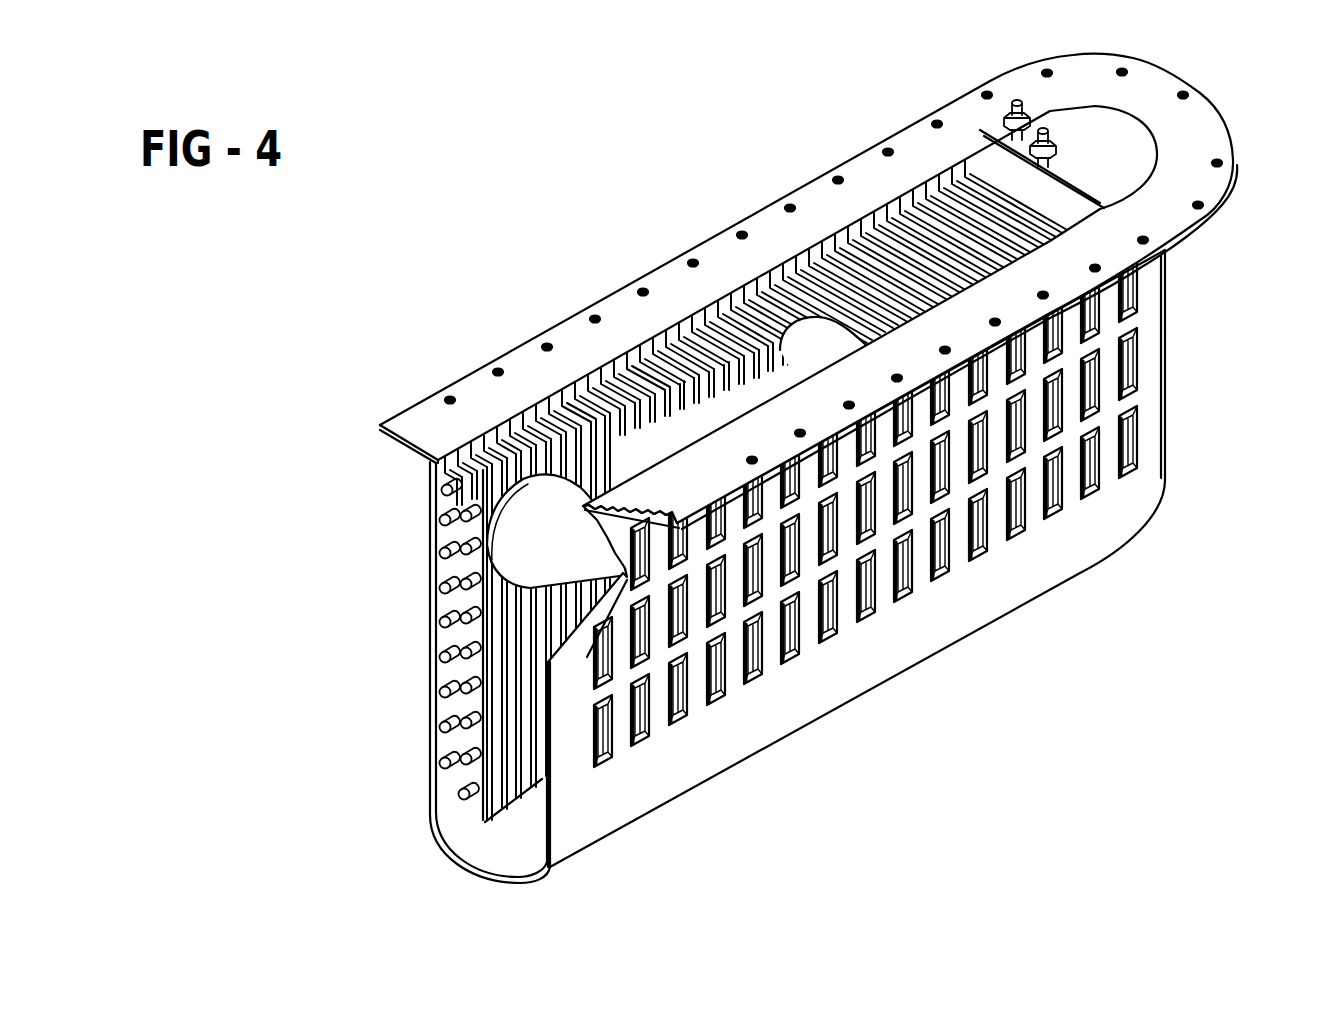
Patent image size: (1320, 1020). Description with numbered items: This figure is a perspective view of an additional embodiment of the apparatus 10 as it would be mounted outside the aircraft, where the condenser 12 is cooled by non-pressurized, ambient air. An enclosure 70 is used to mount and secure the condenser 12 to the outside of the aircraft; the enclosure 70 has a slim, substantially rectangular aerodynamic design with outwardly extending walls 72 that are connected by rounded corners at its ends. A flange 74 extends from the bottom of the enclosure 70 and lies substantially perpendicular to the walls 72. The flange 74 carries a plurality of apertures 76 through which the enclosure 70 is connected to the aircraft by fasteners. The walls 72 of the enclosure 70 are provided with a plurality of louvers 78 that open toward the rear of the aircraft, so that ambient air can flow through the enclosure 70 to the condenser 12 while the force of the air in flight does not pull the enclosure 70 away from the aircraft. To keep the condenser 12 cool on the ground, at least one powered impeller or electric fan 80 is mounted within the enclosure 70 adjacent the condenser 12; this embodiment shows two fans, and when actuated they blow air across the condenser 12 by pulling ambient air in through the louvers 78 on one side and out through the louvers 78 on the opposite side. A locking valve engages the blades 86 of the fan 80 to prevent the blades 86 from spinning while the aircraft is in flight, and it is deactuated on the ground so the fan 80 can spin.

The apparatus 10 is at (328, 376).
The condenser 12 is at (433, 540).
The enclosure 70 is at (794, 566).
The walls 72 is at (432, 700).
The flange 74 is at (847, 282).
The apertures 76 is at (984, 92).
The louvers 78 is at (908, 585).
The electric fan 80 is at (615, 582).
The blades 86 is at (492, 585).